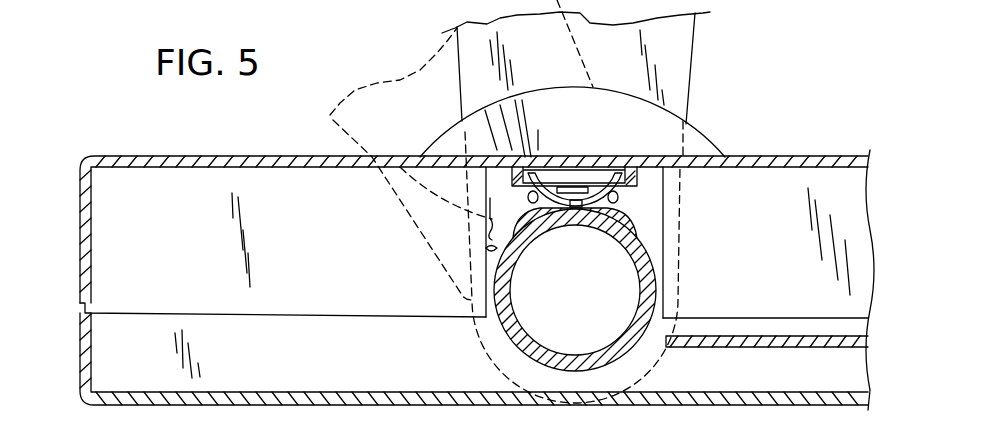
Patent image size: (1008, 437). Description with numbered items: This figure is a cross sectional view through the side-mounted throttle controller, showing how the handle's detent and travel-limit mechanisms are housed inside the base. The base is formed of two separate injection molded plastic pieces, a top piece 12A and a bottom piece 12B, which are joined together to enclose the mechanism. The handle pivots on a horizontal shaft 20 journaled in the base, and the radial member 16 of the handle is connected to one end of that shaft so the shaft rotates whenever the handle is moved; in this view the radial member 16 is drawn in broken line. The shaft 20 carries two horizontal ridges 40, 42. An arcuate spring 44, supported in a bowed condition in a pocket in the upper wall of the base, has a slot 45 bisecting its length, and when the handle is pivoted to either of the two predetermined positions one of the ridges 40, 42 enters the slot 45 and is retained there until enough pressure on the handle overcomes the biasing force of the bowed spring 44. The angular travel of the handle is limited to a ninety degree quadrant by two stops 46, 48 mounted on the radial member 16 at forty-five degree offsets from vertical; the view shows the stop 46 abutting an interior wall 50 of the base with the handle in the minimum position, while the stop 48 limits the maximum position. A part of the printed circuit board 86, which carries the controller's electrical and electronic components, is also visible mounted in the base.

The top piece 12A is at (80, 255).
The bottom piece 12B is at (80, 342).
The radial member 16 is at (325, 125).
The horizontal shaft 20 is at (515, 350).
The horizontal ridge 40 is at (513, 262).
The horizontal ridge 42 is at (612, 213).
The arcuate spring 44 is at (553, 170).
The slot 45 is at (600, 172).
The stop 46 is at (528, 212).
The stop 48 is at (620, 197).
The interior wall 50 is at (492, 248).
The printed circuit board 86 is at (765, 333).